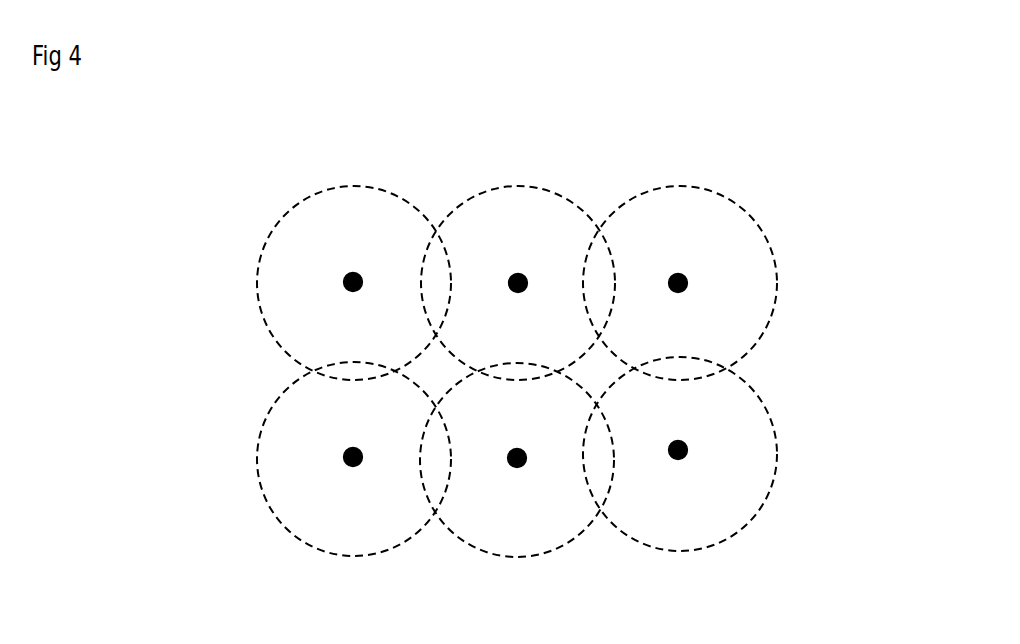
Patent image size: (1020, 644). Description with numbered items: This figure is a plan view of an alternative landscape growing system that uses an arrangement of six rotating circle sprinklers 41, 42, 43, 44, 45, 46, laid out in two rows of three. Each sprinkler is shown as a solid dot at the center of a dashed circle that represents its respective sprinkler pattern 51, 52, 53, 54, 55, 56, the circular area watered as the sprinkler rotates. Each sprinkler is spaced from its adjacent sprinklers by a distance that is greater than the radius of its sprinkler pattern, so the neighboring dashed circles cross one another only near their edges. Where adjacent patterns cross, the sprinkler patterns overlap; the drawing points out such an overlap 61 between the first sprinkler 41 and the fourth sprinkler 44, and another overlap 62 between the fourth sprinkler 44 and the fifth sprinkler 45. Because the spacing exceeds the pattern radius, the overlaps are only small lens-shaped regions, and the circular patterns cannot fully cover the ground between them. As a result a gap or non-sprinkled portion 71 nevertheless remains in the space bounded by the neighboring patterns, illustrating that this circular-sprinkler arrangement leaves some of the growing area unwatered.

The rotating circle sprinkler 41 is at (358, 275).
The rotating circle sprinkler 42 is at (521, 275).
The rotating circle sprinkler 43 is at (683, 277).
The rotating circle sprinkler 44 is at (350, 467).
The rotating circle sprinkler 45 is at (514, 468).
The rotating circle sprinkler 46 is at (675, 462).
The sprinkler pattern 51 is at (413, 208).
The sprinkler pattern 52 is at (580, 212).
The sprinkler pattern 53 is at (753, 218).
The sprinkler pattern 54 is at (282, 523).
The sprinkler pattern 55 is at (452, 532).
The sprinkler pattern 56 is at (620, 530).
The overlap 61 is at (353, 373).
The overlap 62 is at (435, 462).
The gap or non-sprinkled portion 71 is at (435, 377).